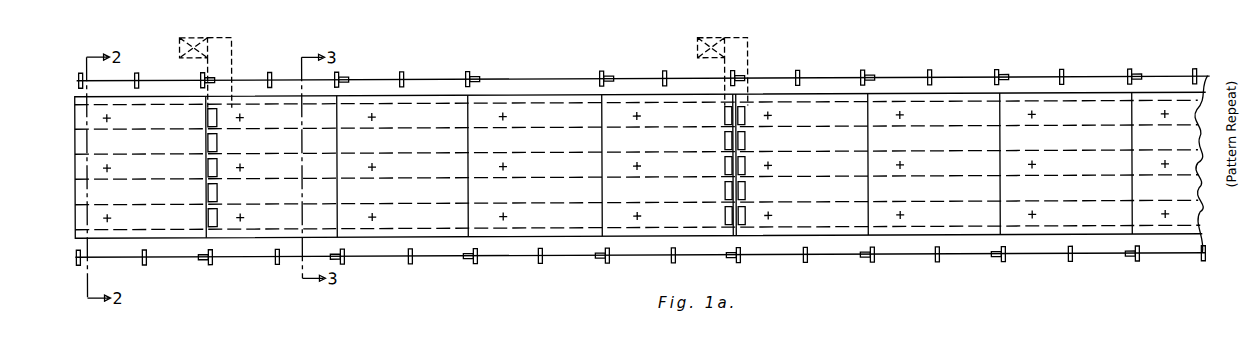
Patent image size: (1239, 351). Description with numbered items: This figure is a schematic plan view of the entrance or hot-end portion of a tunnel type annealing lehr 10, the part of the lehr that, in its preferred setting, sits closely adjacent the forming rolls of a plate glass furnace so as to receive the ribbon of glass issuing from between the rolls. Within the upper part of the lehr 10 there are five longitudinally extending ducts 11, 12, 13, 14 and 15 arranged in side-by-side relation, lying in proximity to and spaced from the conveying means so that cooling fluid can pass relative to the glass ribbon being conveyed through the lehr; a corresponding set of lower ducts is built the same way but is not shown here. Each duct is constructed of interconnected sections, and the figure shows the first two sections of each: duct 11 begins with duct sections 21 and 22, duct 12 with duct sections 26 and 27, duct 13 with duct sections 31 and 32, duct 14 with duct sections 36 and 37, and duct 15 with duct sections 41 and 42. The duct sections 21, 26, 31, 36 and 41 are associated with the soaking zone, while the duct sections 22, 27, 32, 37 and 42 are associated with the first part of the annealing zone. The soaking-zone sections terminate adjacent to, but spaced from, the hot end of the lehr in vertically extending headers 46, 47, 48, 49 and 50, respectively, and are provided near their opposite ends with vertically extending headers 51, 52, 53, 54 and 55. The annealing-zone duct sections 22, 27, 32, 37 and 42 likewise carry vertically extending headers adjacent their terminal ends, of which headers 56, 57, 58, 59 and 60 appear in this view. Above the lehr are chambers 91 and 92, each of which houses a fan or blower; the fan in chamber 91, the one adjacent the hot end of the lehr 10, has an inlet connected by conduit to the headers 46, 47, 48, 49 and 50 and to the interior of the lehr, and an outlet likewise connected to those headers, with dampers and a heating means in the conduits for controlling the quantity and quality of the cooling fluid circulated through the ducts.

The annealing lehr 10 is at (550, 66).
The duct 11 is at (1188, 117).
The duct 12 is at (1188, 142).
The duct 13 is at (1188, 167).
The duct 14 is at (1188, 192).
The duct 15 is at (1188, 217).
The duct section 21 is at (390, 117).
The duct section 22 is at (1054, 115).
The duct section 26 is at (402, 142).
The duct section 27 is at (1071, 140).
The duct section 31 is at (390, 167).
The duct section 32 is at (1054, 165).
The duct section 36 is at (402, 192).
The duct section 37 is at (1071, 190).
The duct section 41 is at (390, 217).
The duct section 42 is at (1054, 215).
The vertically extending header 46 is at (208, 116).
The vertically extending header 47 is at (208, 141).
The vertically extending header 48 is at (208, 166).
The vertically extending header 49 is at (208, 191).
The vertically extending header 50 is at (208, 216).
The vertically extending header 51 is at (725, 116).
The vertically extending header 52 is at (725, 141).
The vertically extending header 53 is at (725, 166).
The vertically extending header 54 is at (725, 191).
The vertically extending header 55 is at (725, 216).
The vertically extending header 56 is at (745, 119).
The vertically extending header 57 is at (746, 141).
The vertically extending header 58 is at (746, 166).
The vertically extending header 59 is at (746, 191).
The vertically extending header 60 is at (746, 216).
The chamber 91 is at (223, 45).
The chamber 92 is at (735, 42).